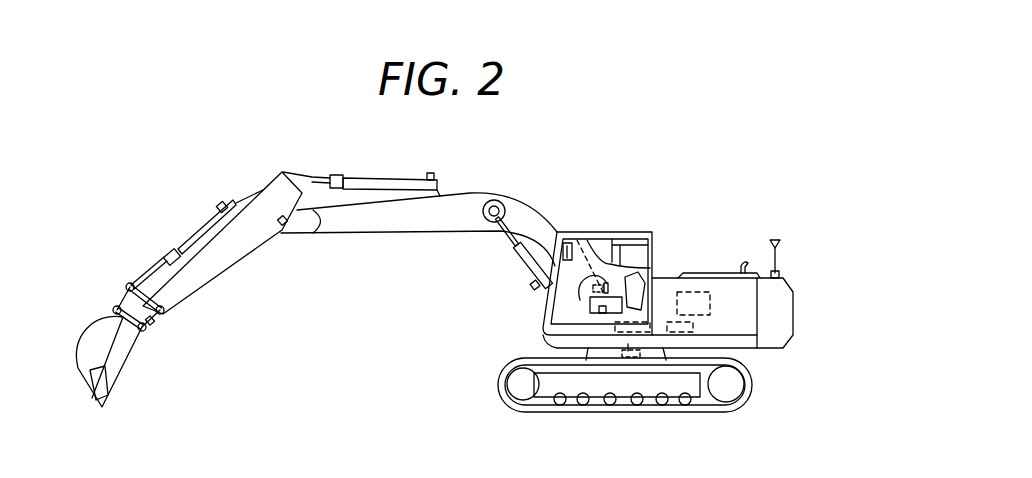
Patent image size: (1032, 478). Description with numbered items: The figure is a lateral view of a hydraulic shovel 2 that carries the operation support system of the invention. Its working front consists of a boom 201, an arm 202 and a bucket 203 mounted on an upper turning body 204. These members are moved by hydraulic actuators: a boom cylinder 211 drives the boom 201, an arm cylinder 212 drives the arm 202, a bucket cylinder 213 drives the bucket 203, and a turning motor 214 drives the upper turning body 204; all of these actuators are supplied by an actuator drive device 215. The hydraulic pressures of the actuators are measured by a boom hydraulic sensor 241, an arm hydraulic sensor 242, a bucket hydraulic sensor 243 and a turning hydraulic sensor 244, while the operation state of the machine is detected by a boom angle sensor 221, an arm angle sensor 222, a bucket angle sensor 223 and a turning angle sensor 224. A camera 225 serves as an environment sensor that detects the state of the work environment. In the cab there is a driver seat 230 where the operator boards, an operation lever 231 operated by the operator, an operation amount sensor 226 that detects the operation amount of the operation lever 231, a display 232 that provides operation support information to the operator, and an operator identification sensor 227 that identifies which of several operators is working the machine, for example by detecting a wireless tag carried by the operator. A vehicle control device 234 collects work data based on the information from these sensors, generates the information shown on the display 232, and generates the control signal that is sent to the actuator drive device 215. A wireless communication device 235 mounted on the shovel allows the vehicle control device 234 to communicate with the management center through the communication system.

The hydraulic shovel 2 is at (756, 160).
The boom 201 is at (528, 200).
The arm 202 is at (276, 187).
The bucket 203 is at (97, 318).
The upper turning body 204 is at (793, 332).
The boom cylinder 211 is at (513, 247).
The arm cylinder 212 is at (360, 181).
The bucket cylinder 213 is at (195, 233).
The turning motor 214 is at (617, 372).
The actuator drive device 215 is at (703, 292).
The boom angle sensor 221 is at (600, 312).
The arm angle sensor 222 is at (285, 234).
The bucket angle sensor 223 is at (160, 320).
The turning angle sensor 224 is at (585, 398).
The camera 225 is at (563, 232).
The operation amount sensor 226 is at (650, 268).
The operator identification sensor 227 is at (600, 314).
The driver seat 230 is at (647, 260).
The operation lever 231 is at (646, 225).
The display 232 is at (590, 232).
The vehicle control device 234 is at (673, 333).
The wireless communication device 235 is at (775, 240).
The boom hydraulic sensor 241 is at (531, 287).
The arm hydraulic sensor 242 is at (433, 172).
The bucket hydraulic sensor 243 is at (220, 203).
The turning hydraulic sensor 244 is at (630, 350).